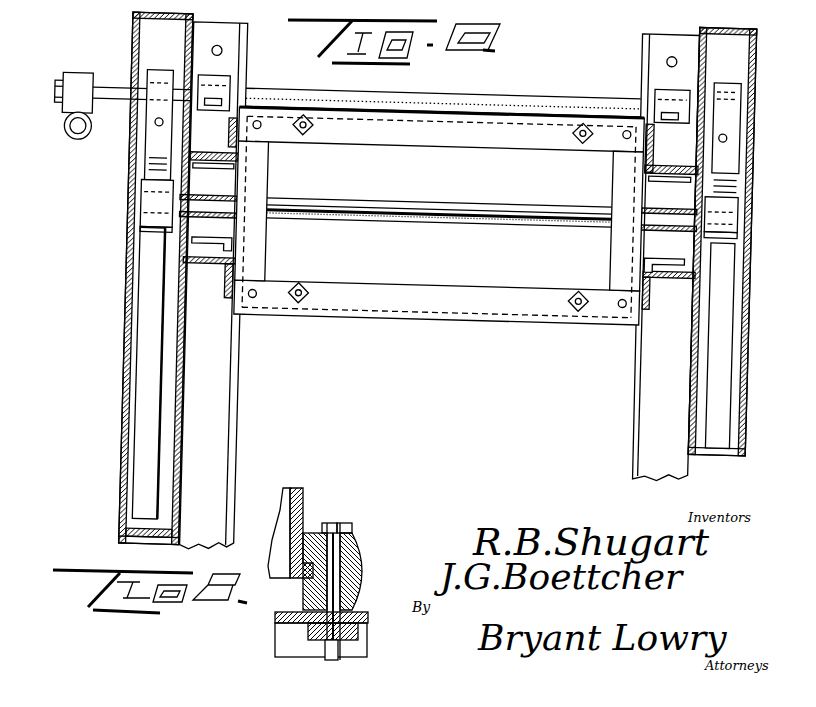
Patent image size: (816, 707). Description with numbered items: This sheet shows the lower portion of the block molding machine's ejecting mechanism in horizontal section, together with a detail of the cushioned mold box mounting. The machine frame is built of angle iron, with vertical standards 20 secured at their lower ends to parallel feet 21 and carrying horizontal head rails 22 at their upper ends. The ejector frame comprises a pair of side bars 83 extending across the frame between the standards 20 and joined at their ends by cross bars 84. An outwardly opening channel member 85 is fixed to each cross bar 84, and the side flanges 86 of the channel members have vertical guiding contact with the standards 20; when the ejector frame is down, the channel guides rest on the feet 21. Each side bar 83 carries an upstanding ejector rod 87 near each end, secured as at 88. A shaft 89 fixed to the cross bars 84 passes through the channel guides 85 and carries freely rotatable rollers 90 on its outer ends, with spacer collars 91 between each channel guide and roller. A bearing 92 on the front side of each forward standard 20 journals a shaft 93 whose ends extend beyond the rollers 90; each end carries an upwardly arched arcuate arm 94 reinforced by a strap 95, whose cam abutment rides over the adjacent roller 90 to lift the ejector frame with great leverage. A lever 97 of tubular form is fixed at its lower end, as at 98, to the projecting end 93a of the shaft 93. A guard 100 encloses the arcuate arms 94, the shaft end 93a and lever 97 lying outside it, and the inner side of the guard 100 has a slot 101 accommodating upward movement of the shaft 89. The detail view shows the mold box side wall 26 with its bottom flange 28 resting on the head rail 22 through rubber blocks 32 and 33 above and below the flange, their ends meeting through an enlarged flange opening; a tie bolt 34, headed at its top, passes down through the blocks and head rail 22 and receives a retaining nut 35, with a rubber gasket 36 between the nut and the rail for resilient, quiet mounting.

In FIG. 6, the vertical standards 20 is at (237, 153).
In FIG. 6, the feet 21 is at (240, 447).
In FIG. 8, the head rails 22 is at (273, 614).
In FIG. 8, the side walls 26 is at (303, 497).
In FIG. 8, the bottom flange 28 is at (370, 577).
In FIG. 8, the rubber block 32 is at (350, 542).
In FIG. 8, the rubber block 33 is at (362, 600).
In FIG. 8, the tie bolt 34 is at (360, 548).
In FIG. 8, the retaining nut 35 is at (367, 646).
In FIG. 8, the rubber gasket 36 is at (307, 628).
In FIG. 6, the side bars 83 is at (483, 128).
In FIG. 6, the cross bars 84 is at (623, 175).
In FIG. 6, the channel member 85 is at (258, 247).
In FIG. 6, the side flanges 86 is at (191, 171).
In FIG. 6, the ejector rods 87 is at (309, 293).
In FIG. 6, the securing means 88 is at (311, 303).
In FIG. 6, the shaft 89 is at (403, 210).
In FIG. 6, the rollers 90 is at (157, 199).
In FIG. 6, the spacer collars 91 is at (697, 166).
In FIG. 6, the bearing 92 is at (217, 87).
In FIG. 6, the shaft 93 is at (419, 100).
In FIG. 6, the projecting end 93a is at (112, 93).
In FIG. 6, the arcuate arm 94 is at (157, 374).
In FIG. 6, the strap 95 is at (151, 120).
In FIG. 6, the lever 97 is at (63, 138).
In FIG. 6, the lever fixing 98 is at (73, 89).
In FIG. 6, the guard 100 is at (130, 411).
In FIG. 6, the slot 101 is at (171, 239).